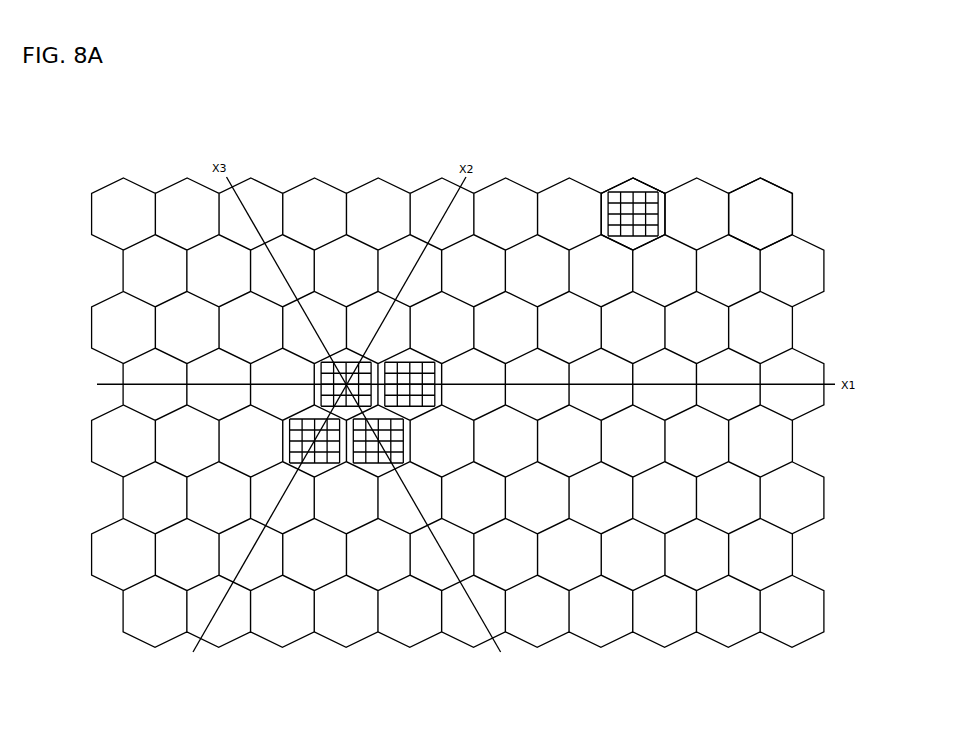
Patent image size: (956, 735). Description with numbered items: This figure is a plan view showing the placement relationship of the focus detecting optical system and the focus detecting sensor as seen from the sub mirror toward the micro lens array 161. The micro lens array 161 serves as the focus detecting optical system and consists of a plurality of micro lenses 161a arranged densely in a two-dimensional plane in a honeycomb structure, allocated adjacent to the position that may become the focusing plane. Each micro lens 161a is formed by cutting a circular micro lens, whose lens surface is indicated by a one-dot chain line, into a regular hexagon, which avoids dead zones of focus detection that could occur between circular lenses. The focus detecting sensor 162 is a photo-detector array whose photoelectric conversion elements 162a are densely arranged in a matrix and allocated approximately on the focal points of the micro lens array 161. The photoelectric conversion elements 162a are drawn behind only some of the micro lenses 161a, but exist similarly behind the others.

The micro lens array 161 is at (729, 141).
The micro lens 161a is at (763, 213).
The focus detecting sensor 162 is at (627, 185).
The photoelectric conversion element 162a is at (646, 186).